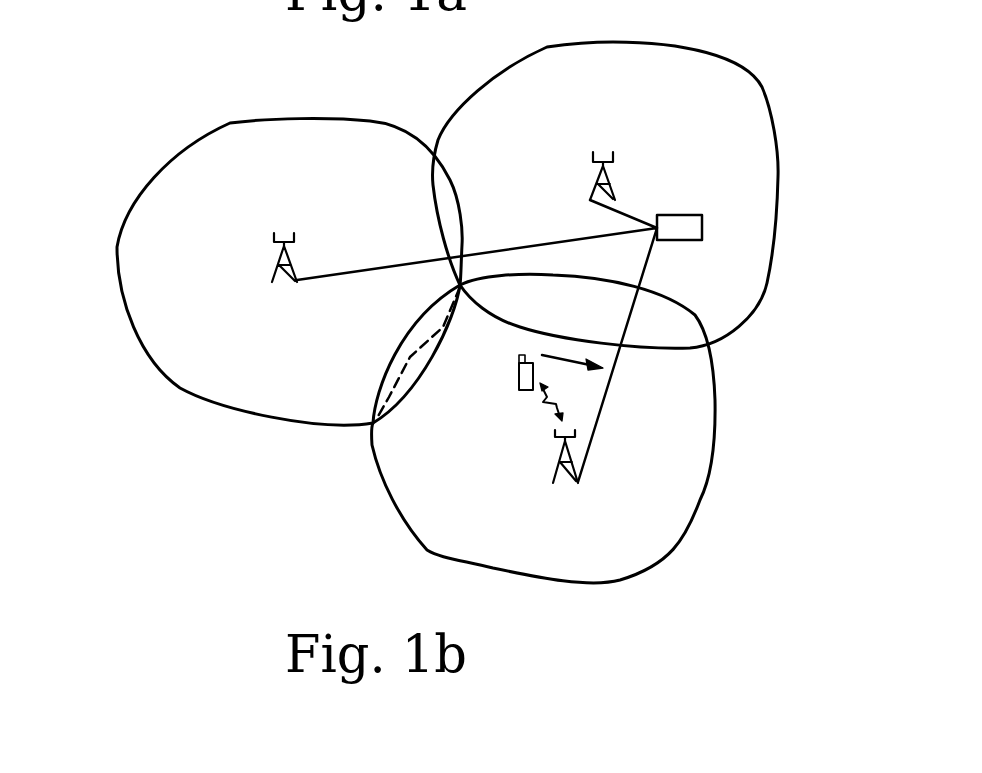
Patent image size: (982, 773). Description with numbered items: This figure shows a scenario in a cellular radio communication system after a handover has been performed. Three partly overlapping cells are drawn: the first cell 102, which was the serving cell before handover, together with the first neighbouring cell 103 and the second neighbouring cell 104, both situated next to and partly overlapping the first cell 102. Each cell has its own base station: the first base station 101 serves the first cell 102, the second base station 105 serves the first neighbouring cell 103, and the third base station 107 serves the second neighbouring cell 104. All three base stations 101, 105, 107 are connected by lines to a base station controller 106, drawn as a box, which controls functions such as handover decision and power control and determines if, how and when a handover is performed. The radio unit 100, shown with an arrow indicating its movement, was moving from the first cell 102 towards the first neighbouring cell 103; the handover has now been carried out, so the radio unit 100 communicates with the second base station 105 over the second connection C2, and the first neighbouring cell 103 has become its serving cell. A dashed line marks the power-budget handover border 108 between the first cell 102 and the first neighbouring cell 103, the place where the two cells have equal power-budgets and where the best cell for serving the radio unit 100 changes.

The radio unit 100 is at (519, 382).
The first base station 101 is at (285, 233).
The first cell 102 is at (163, 182).
The first neighbouring cell 103 is at (705, 497).
The second neighbouring cell 104 is at (760, 263).
The second base station 105 is at (557, 456).
The base station controller 106 is at (702, 218).
The third base station 107 is at (603, 152).
The power-budget handover border 108 is at (403, 362).
The second connection C2 is at (563, 403).